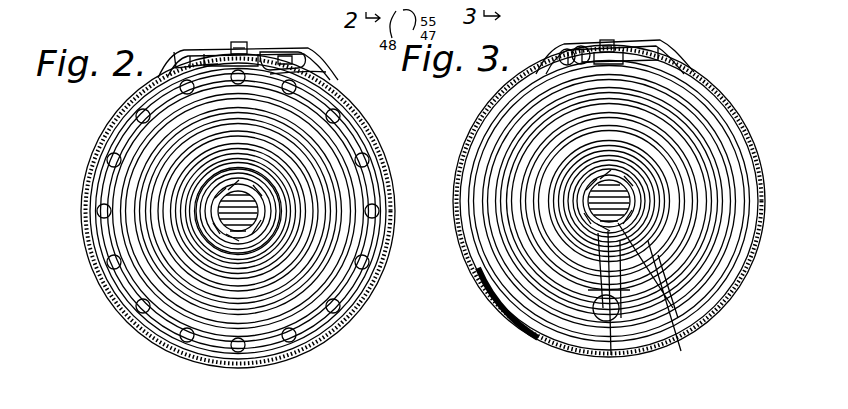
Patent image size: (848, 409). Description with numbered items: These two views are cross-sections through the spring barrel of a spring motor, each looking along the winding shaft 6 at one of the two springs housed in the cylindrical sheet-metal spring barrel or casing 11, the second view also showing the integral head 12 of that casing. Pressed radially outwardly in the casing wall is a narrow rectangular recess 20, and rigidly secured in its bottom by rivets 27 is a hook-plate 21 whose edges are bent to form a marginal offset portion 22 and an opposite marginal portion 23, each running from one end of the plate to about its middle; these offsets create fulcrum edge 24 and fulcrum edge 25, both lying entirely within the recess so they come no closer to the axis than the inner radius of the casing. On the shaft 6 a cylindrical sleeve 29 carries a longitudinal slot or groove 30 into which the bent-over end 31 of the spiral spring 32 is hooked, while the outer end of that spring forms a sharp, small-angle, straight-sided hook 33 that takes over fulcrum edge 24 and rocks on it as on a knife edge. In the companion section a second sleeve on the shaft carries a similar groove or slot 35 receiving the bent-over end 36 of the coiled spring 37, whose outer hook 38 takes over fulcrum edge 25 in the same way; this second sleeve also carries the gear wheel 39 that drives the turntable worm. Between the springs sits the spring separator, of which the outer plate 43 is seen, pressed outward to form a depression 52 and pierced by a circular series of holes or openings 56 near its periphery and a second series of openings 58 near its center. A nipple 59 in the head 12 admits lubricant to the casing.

In FIG. 2, the winding shaft 6 is at (226, 183).
In FIG. 3, the winding shaft 6 is at (640, 194).
In FIG. 2, the spring barrel or casing 11 is at (364, 280).
In FIG. 3, the spring barrel or casing 11 is at (738, 262).
In FIG. 3, the head 12 is at (702, 118).
In FIG. 2, the recess 20 is at (292, 50).
In FIG. 3, the recess 20 is at (670, 52).
In FIG. 2, the hook-plate 21 is at (216, 36).
In FIG. 3, the hook-plate 21 is at (632, 36).
In FIG. 2, the marginal offset portion 22 is at (268, 42).
In FIG. 2, the marginal portion 23 is at (178, 38).
In FIG. 3, the marginal portion 23 is at (582, 40).
In FIG. 2, the fulcrum edge 24 is at (280, 63).
In FIG. 3, the fulcrum edge 25 is at (548, 46).
In FIG. 2, the rivets 27 is at (234, 34).
In FIG. 3, the rivets 27 is at (600, 30).
In FIG. 2, the cylindrical sleeve 29 is at (250, 206).
In FIG. 2, the slot or groove 30 is at (234, 170).
In FIG. 2, the bent-over end 31 is at (225, 172).
In FIG. 2, the spiral spring 32 is at (120, 277).
In FIG. 2, the hook 33 is at (286, 44).
In FIG. 3, the groove or slot 35 is at (706, 296).
In FIG. 3, the bent-over end 36 is at (590, 342).
In FIG. 3, the coiled spring 37 is at (664, 323).
In FIG. 3, the hook 38 is at (566, 42).
In FIG. 3, the gear wheel 39 is at (618, 190).
In FIG. 2, the outer plate 43 is at (300, 186).
In FIG. 2, the depression 52 is at (210, 300).
In FIG. 2, the holes or openings 56 is at (158, 340).
In FIG. 2, the openings 58 is at (270, 212).
In FIG. 3, the nipple 59 is at (573, 320).